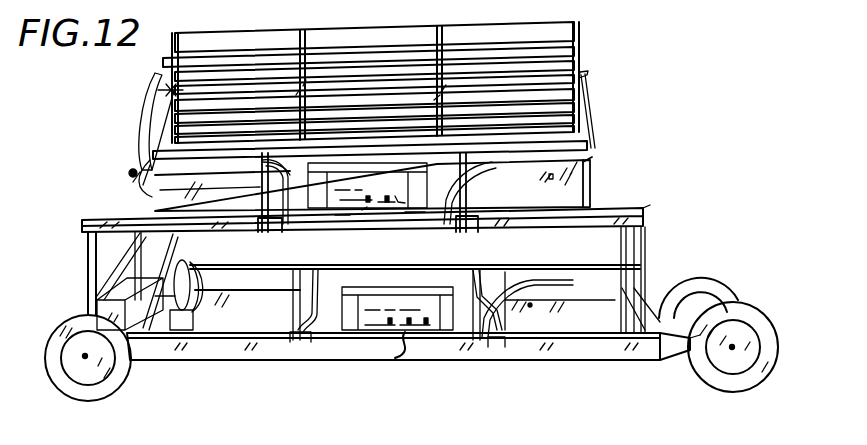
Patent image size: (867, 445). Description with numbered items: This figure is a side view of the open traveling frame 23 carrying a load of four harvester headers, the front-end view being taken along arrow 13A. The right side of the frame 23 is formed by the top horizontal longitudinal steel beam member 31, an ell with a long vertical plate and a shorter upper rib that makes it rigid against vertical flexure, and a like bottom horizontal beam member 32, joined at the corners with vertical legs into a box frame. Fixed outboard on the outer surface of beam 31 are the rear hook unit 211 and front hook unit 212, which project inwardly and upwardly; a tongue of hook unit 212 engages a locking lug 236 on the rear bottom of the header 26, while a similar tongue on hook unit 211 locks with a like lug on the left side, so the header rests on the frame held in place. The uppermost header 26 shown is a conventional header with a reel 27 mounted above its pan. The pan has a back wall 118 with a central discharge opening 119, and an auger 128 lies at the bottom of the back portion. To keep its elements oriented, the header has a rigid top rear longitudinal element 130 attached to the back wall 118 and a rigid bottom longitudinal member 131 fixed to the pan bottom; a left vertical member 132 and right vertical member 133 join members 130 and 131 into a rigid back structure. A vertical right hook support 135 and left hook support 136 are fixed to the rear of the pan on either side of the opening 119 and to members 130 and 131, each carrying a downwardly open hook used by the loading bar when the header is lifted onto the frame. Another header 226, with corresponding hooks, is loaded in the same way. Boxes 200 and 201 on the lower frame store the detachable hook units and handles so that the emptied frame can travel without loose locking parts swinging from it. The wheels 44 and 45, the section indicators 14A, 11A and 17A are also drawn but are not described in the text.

The reel 27 is at (585, 100).
The header 26 is at (143, 151).
The bottom longitudinal member 131 is at (587, 152).
The top rear longitudinal element 130 is at (590, 196).
The left vertical member 132 is at (262, 195).
The left hook support 136 is at (262, 168).
The right vertical member 133 is at (467, 186).
The right hook support 135 is at (458, 194).
The back wall 118 is at (556, 195).
The rear hook unit 211 is at (274, 207).
The front hook unit 212 is at (465, 232).
The locking lug 236 is at (244, 238).
The traveling frame 23 is at (67, 313).
The top horizontal right beam member 31 is at (87, 244).
The box 200 is at (105, 298).
The box 201 is at (162, 278).
The bottom horizontal beam member 32 is at (268, 360).
The lower unit 14A is at (408, 371).
The section 11A is at (370, 234).
The central discharge opening 119 is at (338, 220).
The auger 128 is at (425, 220).
The header 226 is at (566, 331).
The front wheel 44 is at (117, 388).
The rear wheel 45 is at (758, 380).
The section 17A is at (668, 200).
The arrow 13A is at (739, 258).